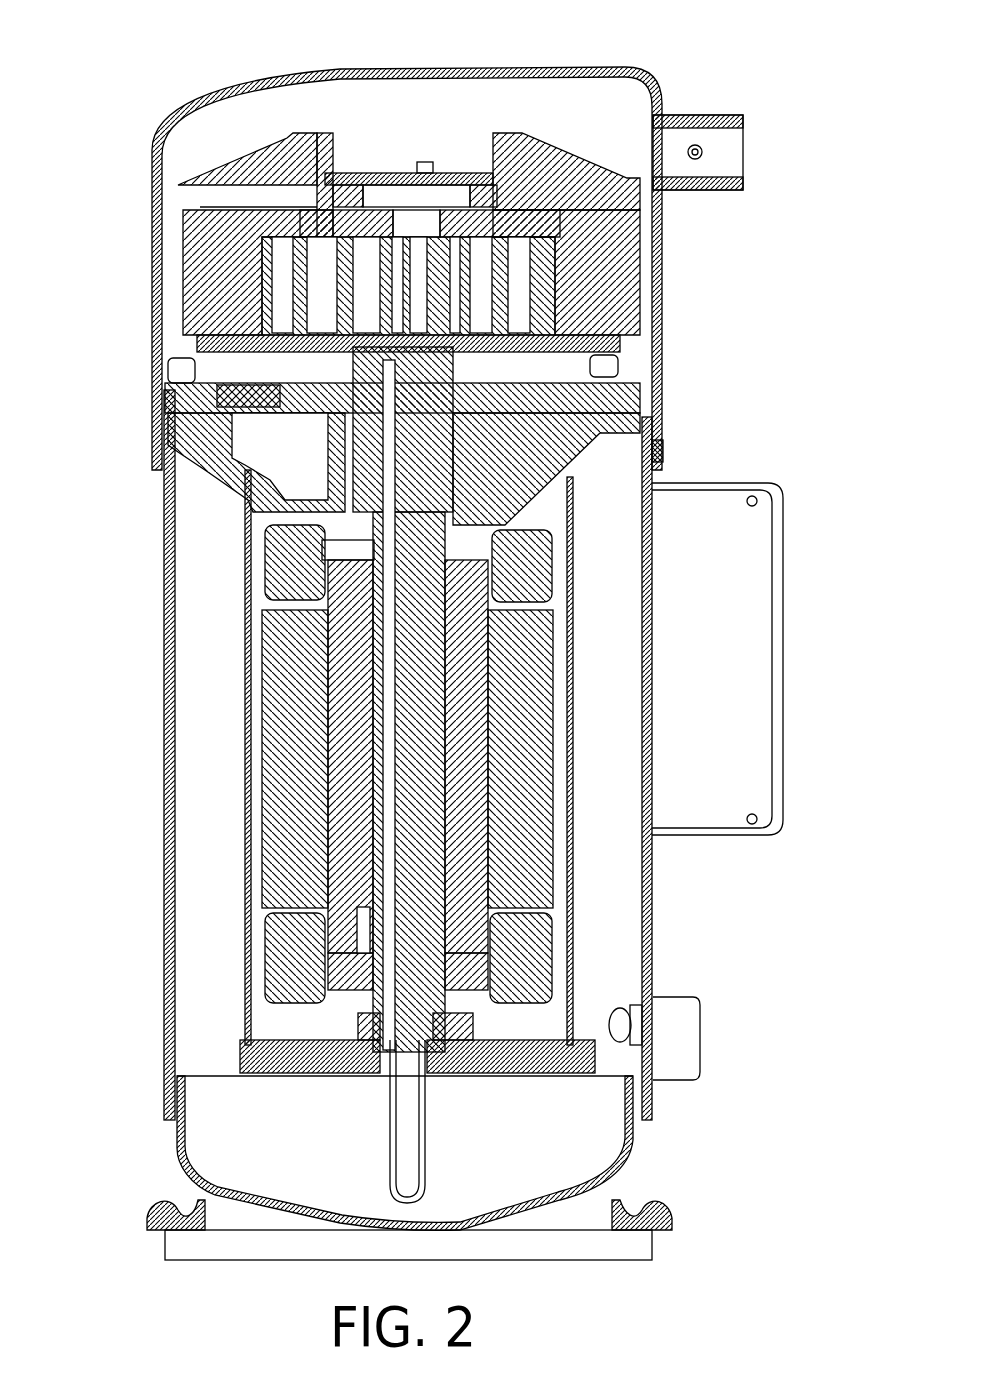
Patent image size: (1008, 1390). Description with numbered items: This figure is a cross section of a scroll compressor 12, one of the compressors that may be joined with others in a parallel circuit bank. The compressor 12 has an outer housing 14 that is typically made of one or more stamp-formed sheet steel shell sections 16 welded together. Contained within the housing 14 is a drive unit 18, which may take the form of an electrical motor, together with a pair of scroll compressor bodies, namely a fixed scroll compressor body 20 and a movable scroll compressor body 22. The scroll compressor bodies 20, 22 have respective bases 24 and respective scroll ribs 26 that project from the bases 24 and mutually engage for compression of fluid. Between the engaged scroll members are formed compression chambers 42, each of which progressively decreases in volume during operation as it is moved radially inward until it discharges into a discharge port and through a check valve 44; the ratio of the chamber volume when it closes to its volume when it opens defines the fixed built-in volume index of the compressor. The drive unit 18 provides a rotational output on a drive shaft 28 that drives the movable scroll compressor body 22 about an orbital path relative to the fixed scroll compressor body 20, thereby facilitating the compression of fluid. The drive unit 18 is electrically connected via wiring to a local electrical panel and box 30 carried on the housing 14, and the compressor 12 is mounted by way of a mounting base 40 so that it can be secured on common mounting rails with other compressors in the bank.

The scroll compressor 12 is at (148, 102).
The outer housing 14 is at (696, 439).
The shell sections 16 is at (667, 287).
The drive unit 18 is at (248, 856).
The fixed scroll compressor body 20 is at (190, 284).
The movable scroll compressor body 22 is at (182, 352).
The bases 24 is at (540, 200).
The scroll ribs 26 is at (480, 187).
The drive shaft 28 is at (445, 684).
The local electrical panel and box 30 is at (745, 506).
The mounting base 40 is at (146, 1190).
The compression chamber 42 is at (272, 238).
The check valve 44 is at (410, 200).